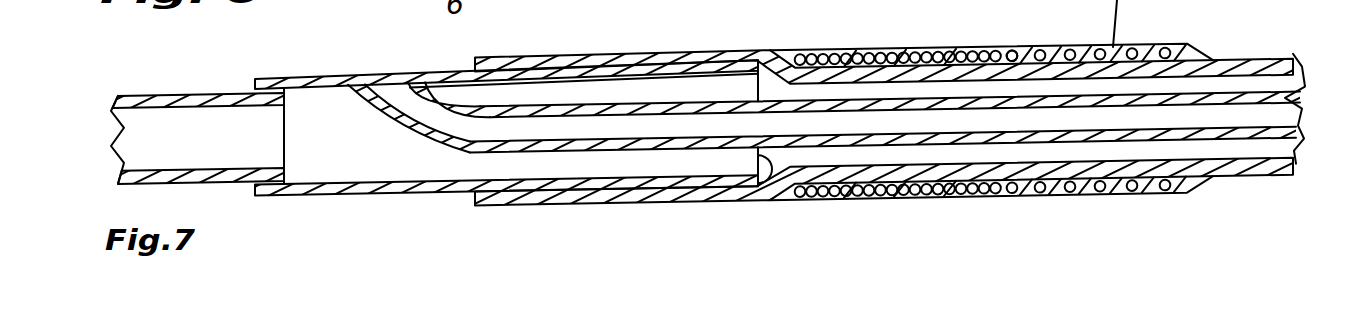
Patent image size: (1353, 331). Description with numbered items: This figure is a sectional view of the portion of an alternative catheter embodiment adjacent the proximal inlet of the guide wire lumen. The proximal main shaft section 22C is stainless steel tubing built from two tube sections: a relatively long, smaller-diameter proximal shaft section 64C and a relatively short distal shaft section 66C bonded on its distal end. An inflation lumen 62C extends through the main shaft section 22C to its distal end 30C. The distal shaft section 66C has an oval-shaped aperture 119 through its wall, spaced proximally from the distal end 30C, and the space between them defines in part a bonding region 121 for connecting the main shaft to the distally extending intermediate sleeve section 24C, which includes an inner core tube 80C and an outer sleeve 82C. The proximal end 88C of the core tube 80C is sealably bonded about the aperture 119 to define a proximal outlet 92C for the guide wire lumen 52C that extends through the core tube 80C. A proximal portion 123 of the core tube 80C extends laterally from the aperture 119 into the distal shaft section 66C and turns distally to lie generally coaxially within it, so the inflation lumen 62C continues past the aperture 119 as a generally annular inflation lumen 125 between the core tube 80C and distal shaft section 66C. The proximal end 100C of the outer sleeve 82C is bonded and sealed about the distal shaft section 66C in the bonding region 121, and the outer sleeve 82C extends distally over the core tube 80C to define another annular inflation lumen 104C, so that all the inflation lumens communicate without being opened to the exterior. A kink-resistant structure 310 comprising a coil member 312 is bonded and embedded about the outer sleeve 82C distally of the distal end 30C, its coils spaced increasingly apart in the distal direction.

The inflation lumen 62C is at (240, 158).
The proximal shaft section 64C is at (207, 182).
The proximal main shaft section 22C is at (316, 206).
The distal shaft section 66C is at (374, 196).
The proximal end of the outer sleeve 100C is at (477, 196).
The annular inflation lumen 125 is at (537, 163).
The distal end of the main shaft section 30C is at (774, 197).
The proximal portion of the core tube 123 is at (366, 108).
The inner core tube 80C is at (446, 149).
The proximal outlet 92C is at (359, 84).
The oval-shaped aperture 119 is at (388, 86).
The proximal end of the core tube 88C is at (406, 78).
The bonding region 121 is at (561, 85).
The guide wire lumen 52C is at (920, 121).
The annular inflation lumen 104C is at (991, 153).
The kink-resistant structure 310 is at (918, 38).
The coil member 312 is at (1016, 45).
The intermediate sleeve section 24C is at (1142, 32).
The outer sleeve 82C is at (1235, 64).